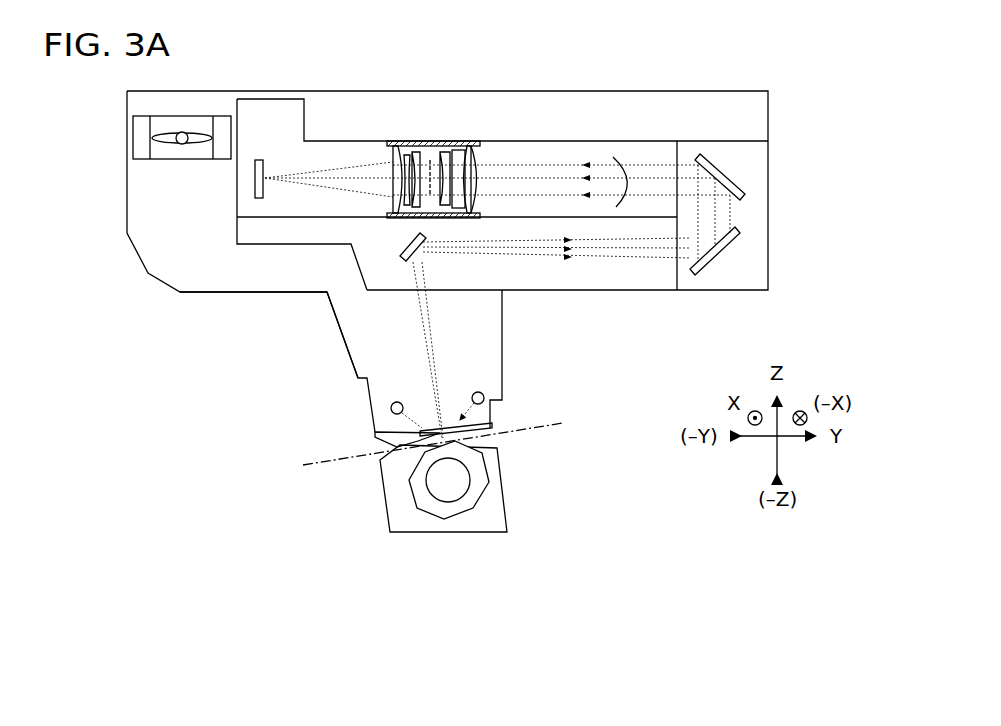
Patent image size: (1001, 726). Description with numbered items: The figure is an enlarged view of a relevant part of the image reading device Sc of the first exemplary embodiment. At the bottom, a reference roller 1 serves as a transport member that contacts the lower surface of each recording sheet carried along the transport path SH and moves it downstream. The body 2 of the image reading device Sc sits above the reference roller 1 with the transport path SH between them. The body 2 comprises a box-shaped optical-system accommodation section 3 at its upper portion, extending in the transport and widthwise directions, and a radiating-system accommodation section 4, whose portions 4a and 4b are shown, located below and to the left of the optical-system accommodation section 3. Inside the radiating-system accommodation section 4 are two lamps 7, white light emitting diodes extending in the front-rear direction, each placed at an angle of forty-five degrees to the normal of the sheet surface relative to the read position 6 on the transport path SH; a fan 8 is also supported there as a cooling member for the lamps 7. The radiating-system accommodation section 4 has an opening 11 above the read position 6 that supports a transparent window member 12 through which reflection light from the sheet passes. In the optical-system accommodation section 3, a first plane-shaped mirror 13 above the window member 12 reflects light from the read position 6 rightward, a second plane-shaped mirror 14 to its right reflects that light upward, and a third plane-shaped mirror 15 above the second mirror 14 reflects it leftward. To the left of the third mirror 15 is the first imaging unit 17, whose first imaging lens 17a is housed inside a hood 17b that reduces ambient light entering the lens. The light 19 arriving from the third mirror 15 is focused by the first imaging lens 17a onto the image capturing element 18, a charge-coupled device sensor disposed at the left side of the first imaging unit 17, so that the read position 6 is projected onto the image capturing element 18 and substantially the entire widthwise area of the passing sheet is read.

The reference roller 1 is at (432, 503).
The body 2 is at (690, 87).
The optical-system accommodation section 3 is at (615, 283).
The radiating-system accommodation section 4 is at (288, 350).
The body side portion 4a is at (347, 320).
The body bottom portion 4b is at (224, 293).
The read position 6 is at (478, 448).
The lamps 7 is at (478, 391).
The fan 8 is at (176, 165).
The opening 11 is at (470, 426).
The window member 12 is at (378, 434).
The first mirror 13 is at (405, 245).
The second mirror 14 is at (720, 256).
The third mirror 15 is at (713, 167).
The first imaging unit 17 is at (470, 134).
The first imaging lens 17a is at (459, 150).
The hood 17b is at (437, 141).
The image capturing element 18 is at (258, 158).
The light 19 is at (630, 153).
The transport path SH is at (553, 428).
The image reading device Sc is at (557, 507).